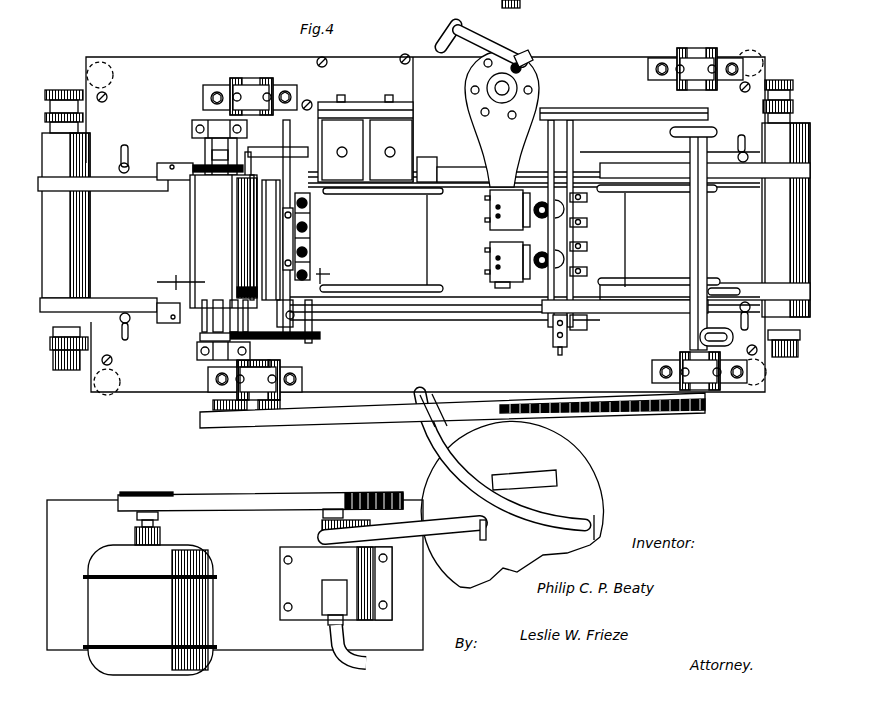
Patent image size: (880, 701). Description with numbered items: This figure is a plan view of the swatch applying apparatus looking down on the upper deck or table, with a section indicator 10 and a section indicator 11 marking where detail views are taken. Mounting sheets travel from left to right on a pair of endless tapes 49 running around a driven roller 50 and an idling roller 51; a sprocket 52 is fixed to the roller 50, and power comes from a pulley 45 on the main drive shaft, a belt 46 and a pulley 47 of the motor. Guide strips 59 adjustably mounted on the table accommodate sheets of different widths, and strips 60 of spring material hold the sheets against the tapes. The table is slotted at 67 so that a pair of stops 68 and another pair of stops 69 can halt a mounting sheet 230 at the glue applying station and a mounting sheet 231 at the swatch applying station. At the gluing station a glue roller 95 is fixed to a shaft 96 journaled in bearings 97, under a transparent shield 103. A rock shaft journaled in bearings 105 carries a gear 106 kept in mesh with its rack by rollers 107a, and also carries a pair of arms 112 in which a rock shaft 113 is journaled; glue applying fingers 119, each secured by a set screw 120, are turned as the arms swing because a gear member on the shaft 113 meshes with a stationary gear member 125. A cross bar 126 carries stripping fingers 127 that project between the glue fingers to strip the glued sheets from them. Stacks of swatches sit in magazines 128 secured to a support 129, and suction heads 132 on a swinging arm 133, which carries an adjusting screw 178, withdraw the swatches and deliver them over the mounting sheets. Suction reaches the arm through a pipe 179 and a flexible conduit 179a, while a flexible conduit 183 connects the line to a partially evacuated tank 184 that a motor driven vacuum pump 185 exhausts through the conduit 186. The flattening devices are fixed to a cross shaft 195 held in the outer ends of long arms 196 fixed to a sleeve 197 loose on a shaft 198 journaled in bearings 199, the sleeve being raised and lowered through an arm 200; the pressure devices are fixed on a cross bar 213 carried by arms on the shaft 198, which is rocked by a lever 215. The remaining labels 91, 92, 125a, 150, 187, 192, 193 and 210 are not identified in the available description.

The base 10 is at (250, 276).
The shaft 11 is at (137, 186).
The pulley 45 is at (698, 414).
The belt 46 is at (362, 428).
The pulley 47 is at (210, 428).
The endless tapes 49 is at (770, 180).
The driven roller 50 is at (790, 122).
The idling roller 51 is at (72, 148).
The sprocket 52 is at (800, 332).
The guide strips 59 is at (400, 166).
The strips of spring material 60 is at (420, 305).
The slot 67 is at (650, 196).
The stops 68 is at (350, 286).
The stops 69 is at (626, 192).
The screw 91 is at (112, 62).
The base plate 92 is at (190, 62).
The glue roller 95 is at (240, 216).
The shaft 96 is at (205, 148).
The bearings 97 is at (206, 124).
The shield 103 is at (196, 215).
The bearings 105 is at (248, 88).
The gear 106 is at (265, 414).
The rollers 107a is at (305, 392).
The arms 112 is at (310, 358).
The rock shaft 113 is at (315, 245).
The glue applying fingers 119 is at (312, 233).
The set screw 120 is at (323, 334).
The stationary gear member 125 is at (200, 336).
The armature 125a is at (245, 232).
The cross bar 126 is at (283, 259).
The stripping fingers 127 is at (312, 215).
The magazines 128 is at (330, 110).
The support 129 is at (372, 110).
The suction heads 132 is at (488, 262).
The swinging arm 133 is at (490, 125).
The hub 150 is at (500, 88).
The adjusting screw 178 is at (488, 194).
The pipe 179 is at (532, 54).
The flexible conduit 179a is at (465, 32).
The flexible conduit 183 is at (437, 453).
The partially evacuated tank 184 is at (336, 605).
The motor driven vacuum pump 185 is at (303, 610).
The conduit 186 is at (430, 518).
The disk 187 is at (605, 481).
The contact block 192 is at (488, 212).
The crank arm 193 is at (486, 119).
The cross shaft 195 is at (545, 300).
The arms 196 is at (598, 115).
The sleeve 197 is at (718, 250).
The shaft 198 is at (708, 218).
The bearings 199 is at (692, 66).
The arm 200 is at (712, 126).
The cross bar 210 is at (655, 108).
The cross bar 213 is at (586, 262).
The lever 215 is at (698, 338).
The mounting sheet 230 is at (124, 240).
The mounting sheet 231 is at (625, 236).